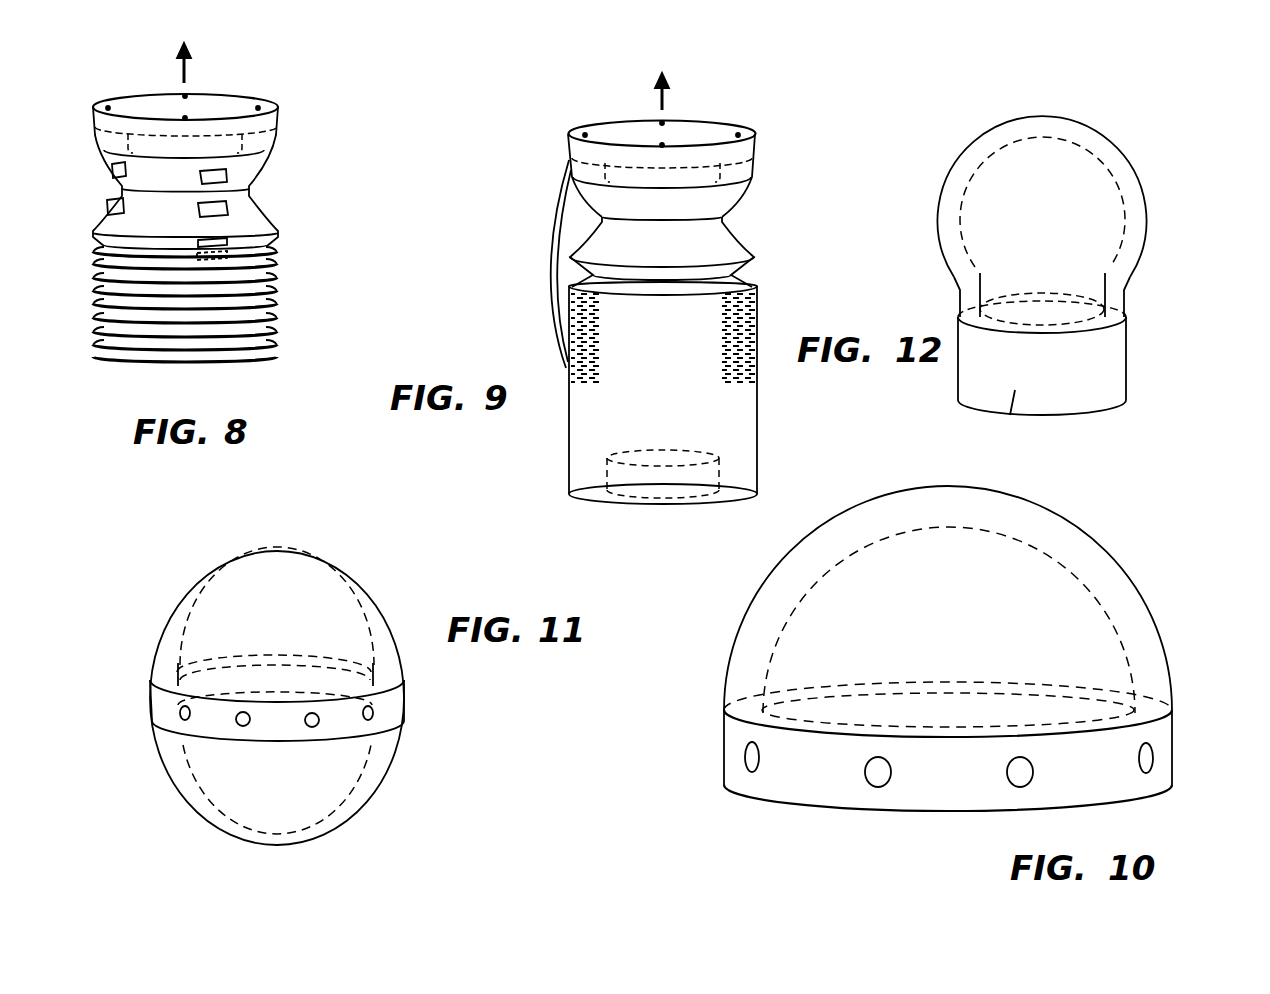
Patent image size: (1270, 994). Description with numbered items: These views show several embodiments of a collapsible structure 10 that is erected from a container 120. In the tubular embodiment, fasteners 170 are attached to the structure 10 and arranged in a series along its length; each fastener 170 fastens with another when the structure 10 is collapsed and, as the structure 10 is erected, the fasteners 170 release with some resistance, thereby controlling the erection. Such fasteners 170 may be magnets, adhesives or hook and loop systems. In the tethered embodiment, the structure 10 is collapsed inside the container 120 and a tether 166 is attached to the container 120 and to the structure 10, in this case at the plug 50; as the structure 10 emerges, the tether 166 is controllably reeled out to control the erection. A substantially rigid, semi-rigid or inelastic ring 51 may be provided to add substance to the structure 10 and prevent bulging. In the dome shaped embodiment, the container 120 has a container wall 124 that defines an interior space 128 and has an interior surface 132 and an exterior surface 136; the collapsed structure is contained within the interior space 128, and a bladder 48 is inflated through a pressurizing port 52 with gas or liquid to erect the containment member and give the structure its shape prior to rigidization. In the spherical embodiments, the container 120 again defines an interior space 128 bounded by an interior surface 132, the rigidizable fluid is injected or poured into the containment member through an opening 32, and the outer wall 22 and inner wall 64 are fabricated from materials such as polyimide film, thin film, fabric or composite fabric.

In FIG. 8, the structure 10 is at (292, 100).
In FIG. 8, the fasteners 170 is at (232, 212).
In FIG. 9, the plug 50 is at (757, 146).
In FIG. 9, the ring 51 is at (724, 218).
In FIG. 9, the container 120 is at (566, 487).
In FIG. 11, the container 120 is at (405, 700).
In FIG. 10, the container 120 is at (1160, 795).
In FIG. 9, the tether 166 is at (555, 200).
In FIG. 12, the outer wall 22 is at (988, 127).
In FIG. 11, the outer wall 22 is at (243, 840).
In FIG. 12, the inner wall 64 is at (1087, 145).
In FIG. 11, the inner wall 64 is at (283, 822).
In FIG. 12, the bladder 48 is at (1095, 207).
In FIG. 10, the bladder 48 is at (1048, 590).
In FIG. 12, the interior surface 132 is at (1112, 312).
In FIG. 11, the interior surface 132 is at (162, 680).
In FIG. 10, the interior surface 132 is at (990, 728).
In FIG. 12, the interior space 128 is at (992, 327).
In FIG. 11, the interior space 128 is at (390, 677).
In FIG. 10, the interior space 128 is at (927, 735).
In FIG. 11, the opening 32 is at (243, 726).
In FIG. 10, the opening 32 is at (1155, 758).
In FIG. 10, the container wall 124 is at (735, 758).
In FIG. 10, the exterior surface 136 is at (794, 785).
In FIG. 10, the pressurizing port 52 is at (1020, 782).